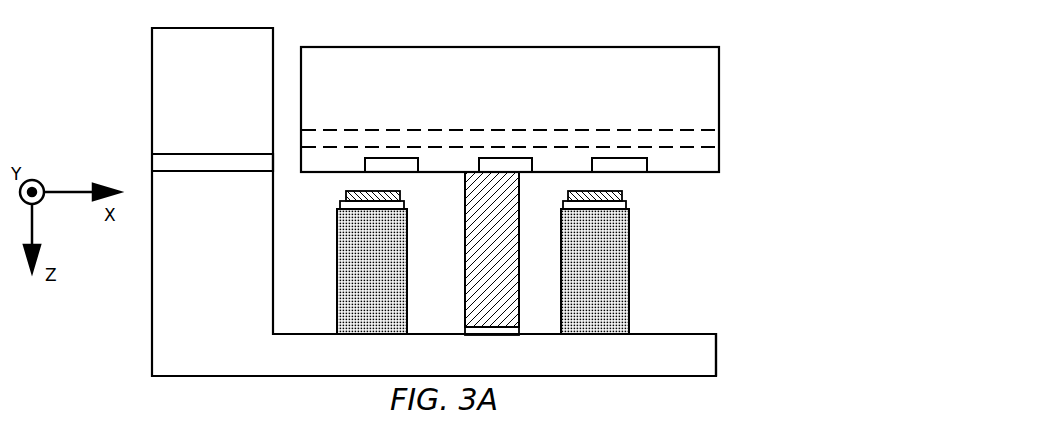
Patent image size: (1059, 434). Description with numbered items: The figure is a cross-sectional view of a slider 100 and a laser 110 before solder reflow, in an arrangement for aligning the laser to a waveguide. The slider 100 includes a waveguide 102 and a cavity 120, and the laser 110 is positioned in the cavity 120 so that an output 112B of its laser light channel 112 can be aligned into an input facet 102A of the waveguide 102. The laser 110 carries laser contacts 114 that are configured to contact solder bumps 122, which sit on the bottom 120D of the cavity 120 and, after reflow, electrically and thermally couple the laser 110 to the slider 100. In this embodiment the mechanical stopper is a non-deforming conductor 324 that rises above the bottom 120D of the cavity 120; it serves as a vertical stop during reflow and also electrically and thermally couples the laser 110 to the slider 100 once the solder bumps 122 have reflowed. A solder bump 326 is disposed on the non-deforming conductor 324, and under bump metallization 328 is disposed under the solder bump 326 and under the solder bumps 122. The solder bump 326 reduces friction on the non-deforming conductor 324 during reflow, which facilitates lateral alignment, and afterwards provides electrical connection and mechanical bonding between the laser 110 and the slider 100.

The slider 100 is at (192, 313).
The waveguide 102 is at (165, 163).
The input facet 102A is at (267, 163).
The laser 110 is at (688, 67).
The laser light channel 112 is at (697, 138).
The output 112B is at (302, 141).
The laser contacts 114 is at (381, 165).
The cavity 120 is at (515, 207).
The bottom of the cavity 120D is at (661, 336).
The solder bumps 122 is at (498, 285).
The non-deforming conductor 324 is at (605, 315).
The solder bump 326 is at (622, 194).
The under bump metallization 328 is at (617, 205).